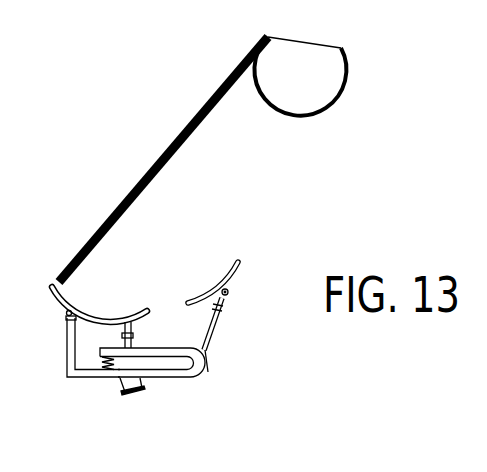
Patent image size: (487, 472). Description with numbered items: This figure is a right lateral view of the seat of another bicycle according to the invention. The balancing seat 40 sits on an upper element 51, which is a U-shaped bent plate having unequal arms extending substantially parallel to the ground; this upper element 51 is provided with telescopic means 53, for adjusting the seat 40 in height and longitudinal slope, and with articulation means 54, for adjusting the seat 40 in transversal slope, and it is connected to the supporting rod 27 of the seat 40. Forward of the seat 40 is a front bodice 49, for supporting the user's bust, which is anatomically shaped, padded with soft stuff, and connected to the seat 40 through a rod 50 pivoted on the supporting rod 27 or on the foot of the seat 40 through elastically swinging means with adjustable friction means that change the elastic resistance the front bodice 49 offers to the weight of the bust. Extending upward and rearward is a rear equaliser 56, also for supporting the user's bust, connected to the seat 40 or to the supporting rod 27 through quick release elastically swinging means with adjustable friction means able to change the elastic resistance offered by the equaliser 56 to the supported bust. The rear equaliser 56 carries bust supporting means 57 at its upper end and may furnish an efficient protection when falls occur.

The supporting rod 27 is at (146, 389).
The balancing seat 40 is at (107, 316).
The front bodice 49 is at (225, 277).
The rod 50 is at (217, 325).
The upper element 51 is at (202, 368).
The telescopic means 53 is at (67, 338).
The articulation means 54 is at (65, 318).
The rear equaliser 56 is at (113, 218).
The bust supporting means 57 is at (347, 70).